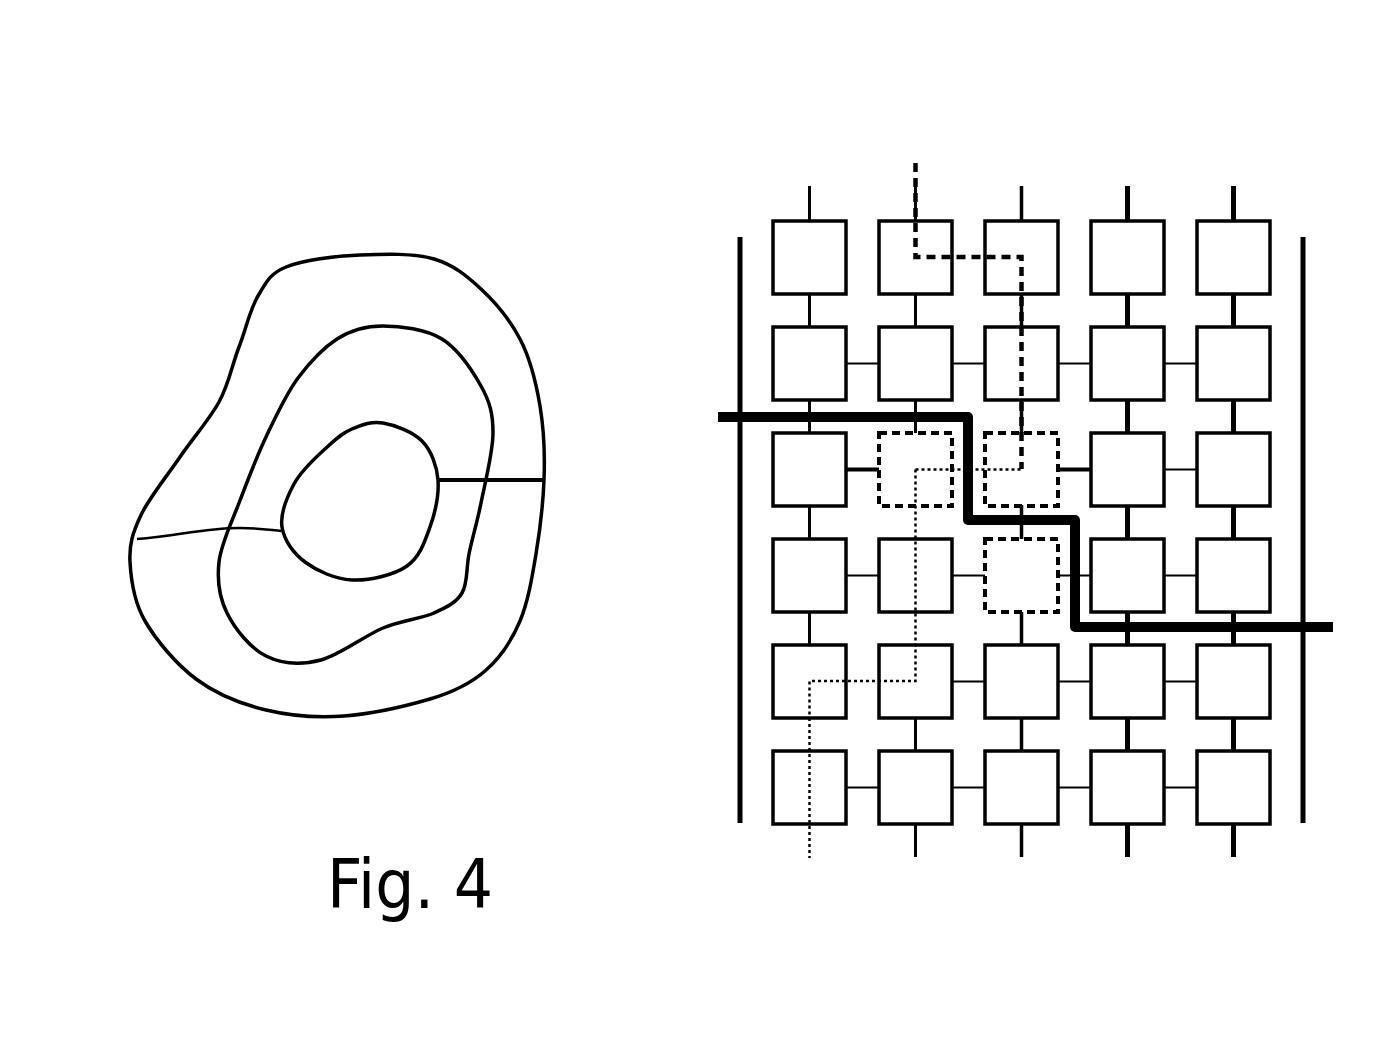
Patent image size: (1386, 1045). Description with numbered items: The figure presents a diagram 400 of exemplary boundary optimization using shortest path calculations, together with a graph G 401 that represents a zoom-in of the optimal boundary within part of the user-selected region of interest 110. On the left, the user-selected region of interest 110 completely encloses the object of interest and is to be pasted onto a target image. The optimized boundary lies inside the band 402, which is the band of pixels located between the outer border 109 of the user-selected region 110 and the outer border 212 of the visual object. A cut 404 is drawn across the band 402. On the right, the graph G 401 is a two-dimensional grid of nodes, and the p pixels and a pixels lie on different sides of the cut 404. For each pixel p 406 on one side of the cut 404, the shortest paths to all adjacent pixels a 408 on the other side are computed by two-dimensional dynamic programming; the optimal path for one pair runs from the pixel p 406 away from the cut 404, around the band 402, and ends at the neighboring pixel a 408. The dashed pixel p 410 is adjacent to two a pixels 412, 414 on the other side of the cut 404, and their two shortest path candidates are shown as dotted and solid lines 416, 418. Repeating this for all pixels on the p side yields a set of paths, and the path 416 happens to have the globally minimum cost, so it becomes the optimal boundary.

The diagram 400 is at (388, 135).
The graph G 401 is at (1021, 143).
The outer border of the user-selected region 109 is at (287, 264).
The user-selected region of interest 110 is at (413, 300).
The band 402 is at (224, 528).
The cut 404 is at (715, 419).
The outer border of the visual object 212 is at (393, 576).
The pixel p 406 is at (1275, 576).
The pixel a 408 is at (1275, 682).
The dashed pixel p 410 is at (1013, 491).
The a pixel 412 is at (898, 458).
The a pixel 414 is at (1011, 565).
The shortest path candidate 416 is at (810, 867).
The shortest path candidate 418 is at (1022, 867).